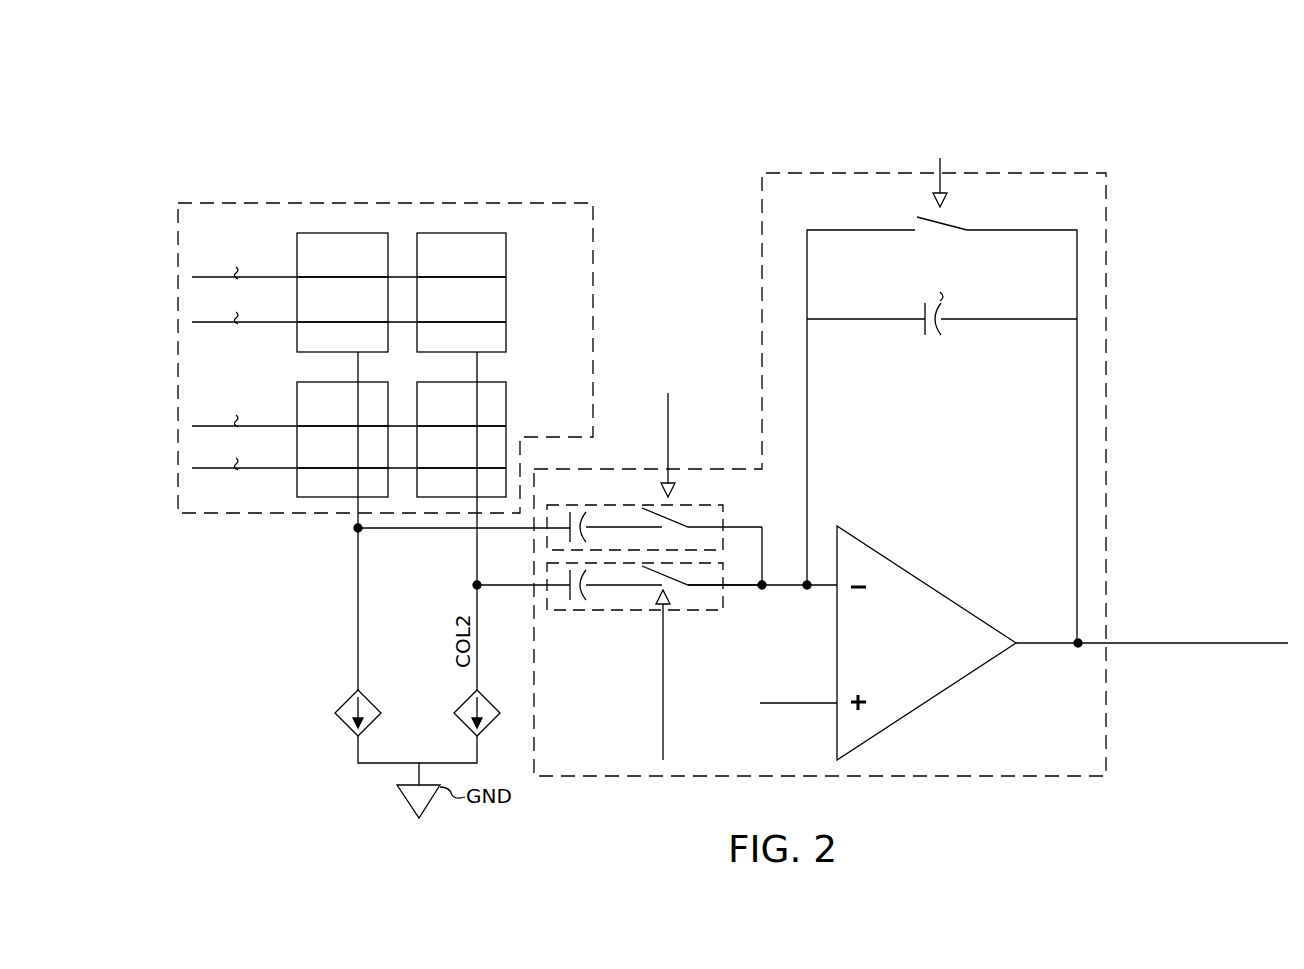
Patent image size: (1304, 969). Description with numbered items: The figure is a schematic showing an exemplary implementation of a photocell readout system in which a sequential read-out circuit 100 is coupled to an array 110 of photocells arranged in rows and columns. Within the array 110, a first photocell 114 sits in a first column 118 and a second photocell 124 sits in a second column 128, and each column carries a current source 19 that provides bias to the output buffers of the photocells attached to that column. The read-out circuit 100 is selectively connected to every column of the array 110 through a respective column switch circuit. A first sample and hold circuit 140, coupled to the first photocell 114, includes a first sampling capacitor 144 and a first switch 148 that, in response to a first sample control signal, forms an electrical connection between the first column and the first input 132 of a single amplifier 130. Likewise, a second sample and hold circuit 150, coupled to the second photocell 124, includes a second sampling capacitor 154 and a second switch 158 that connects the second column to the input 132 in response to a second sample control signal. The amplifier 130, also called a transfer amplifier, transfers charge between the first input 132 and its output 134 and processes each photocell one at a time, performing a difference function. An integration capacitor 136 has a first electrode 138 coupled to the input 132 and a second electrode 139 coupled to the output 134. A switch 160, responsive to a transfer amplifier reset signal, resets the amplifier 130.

The sequential read-out circuit 100 is at (1106, 173).
The array 110 is at (593, 203).
The first photocell 114 is at (297, 497).
The first column 118 is at (346, 233).
The second photocell 124 is at (506, 432).
The second column 128 is at (458, 233).
The amplifier 130 is at (885, 557).
The first input 132 is at (788, 583).
The output 134 is at (1210, 641).
The integration capacitor 136 is at (942, 316).
The first electrode 138 is at (865, 320).
The second electrode 139 is at (1011, 320).
The first sample and hold circuit 140 is at (733, 487).
The first sampling capacitor 144 is at (654, 495).
The first switch 148 is at (654, 556).
The second sample and hold circuit 150 is at (661, 527).
The second sampling capacitor 154 is at (582, 600).
The second switch 158 is at (678, 590).
The switch 160 is at (962, 230).
The current source 19 is at (350, 725).